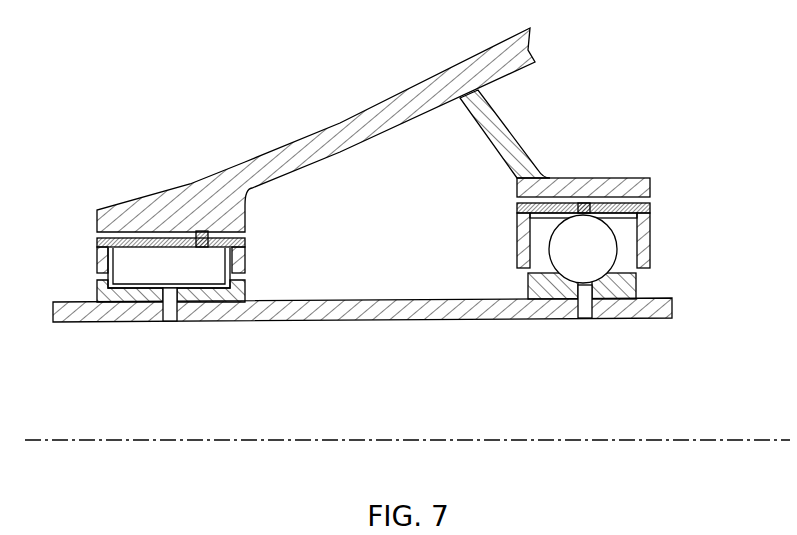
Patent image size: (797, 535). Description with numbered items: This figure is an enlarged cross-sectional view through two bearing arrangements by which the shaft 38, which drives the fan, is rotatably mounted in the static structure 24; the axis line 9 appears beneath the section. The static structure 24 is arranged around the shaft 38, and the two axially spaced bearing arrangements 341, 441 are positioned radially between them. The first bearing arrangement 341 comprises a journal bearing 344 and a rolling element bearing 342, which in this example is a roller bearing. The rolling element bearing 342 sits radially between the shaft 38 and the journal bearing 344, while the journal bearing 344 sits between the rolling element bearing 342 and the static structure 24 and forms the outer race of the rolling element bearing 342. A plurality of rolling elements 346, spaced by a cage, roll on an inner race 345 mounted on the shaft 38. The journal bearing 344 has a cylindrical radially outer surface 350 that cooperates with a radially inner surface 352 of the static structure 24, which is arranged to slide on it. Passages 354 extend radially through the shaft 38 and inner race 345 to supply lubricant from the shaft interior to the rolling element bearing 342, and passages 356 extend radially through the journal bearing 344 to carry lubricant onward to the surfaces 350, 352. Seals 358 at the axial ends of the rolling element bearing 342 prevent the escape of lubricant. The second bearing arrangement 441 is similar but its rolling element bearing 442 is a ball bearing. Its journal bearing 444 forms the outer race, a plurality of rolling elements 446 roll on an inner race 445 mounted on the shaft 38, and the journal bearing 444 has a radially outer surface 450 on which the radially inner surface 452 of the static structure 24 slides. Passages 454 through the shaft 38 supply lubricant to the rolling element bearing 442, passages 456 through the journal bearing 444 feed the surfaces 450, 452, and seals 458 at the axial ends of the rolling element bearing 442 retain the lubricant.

The mounting surface 9 is at (660, 439).
The static structure 24 is at (430, 87).
The shaft 38 is at (403, 322).
The bearing arrangement 341 is at (229, 233).
The rolling element bearing 342 is at (207, 264).
The journal bearing 344 is at (248, 204).
The inner race 345 is at (232, 305).
The rolling elements 346 is at (140, 292).
The radially outer surface 350 is at (138, 228).
The radially inner surface 352 is at (198, 231).
The passages 354 is at (170, 322).
The passages 356 is at (96, 303).
The seals 358 is at (97, 267).
The bearing arrangement 441 is at (638, 195).
The rolling element bearing 442 is at (620, 258).
The journal bearing 444 is at (652, 200).
The inner race 445 is at (627, 312).
The rolling elements 446 is at (586, 303).
The radially outer surface 450 is at (620, 178).
The radially inner surface 452 is at (586, 203).
The passages 454 is at (567, 303).
The passages 456 is at (565, 178).
The seals 458 is at (517, 255).